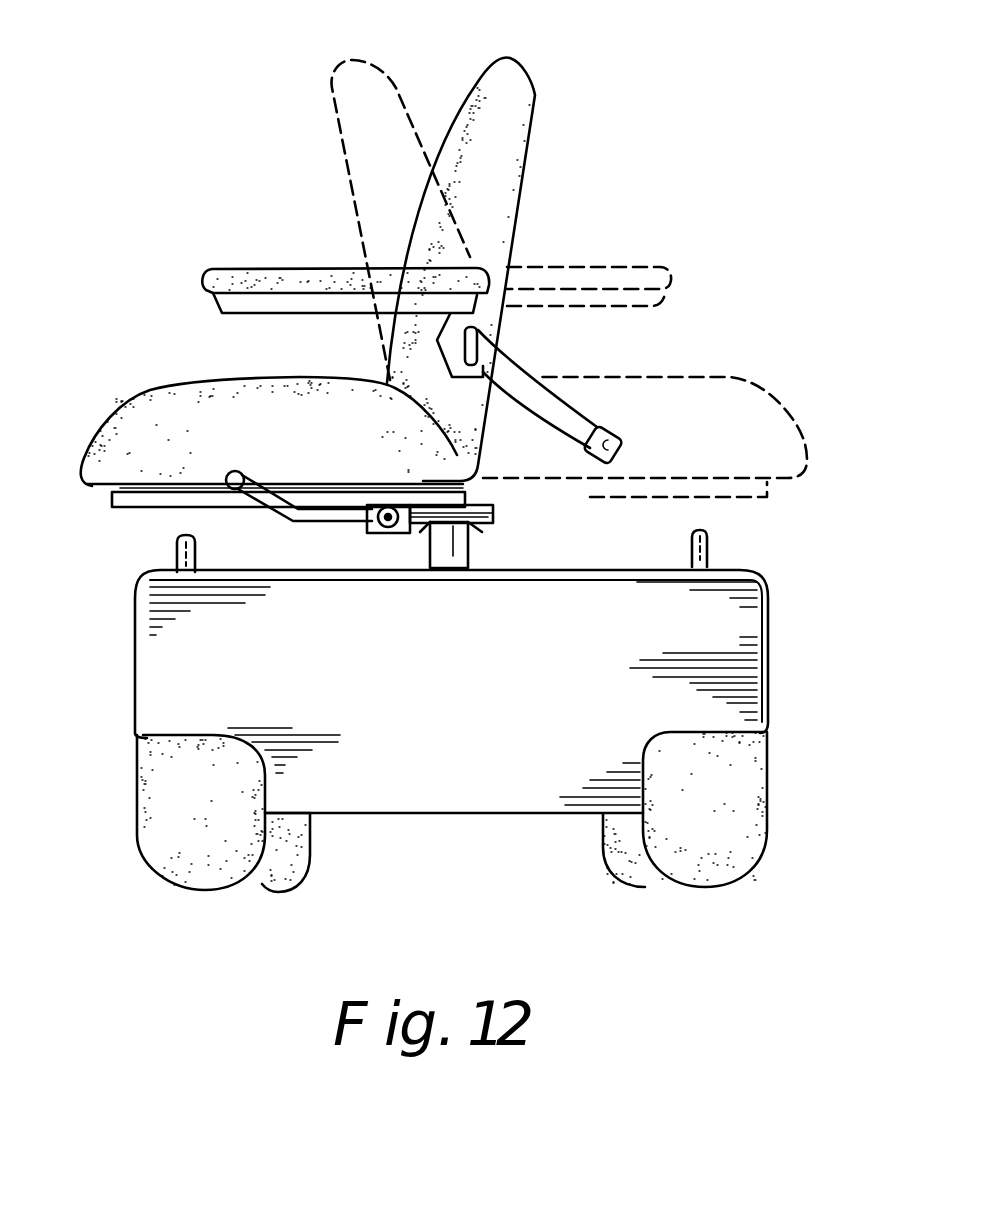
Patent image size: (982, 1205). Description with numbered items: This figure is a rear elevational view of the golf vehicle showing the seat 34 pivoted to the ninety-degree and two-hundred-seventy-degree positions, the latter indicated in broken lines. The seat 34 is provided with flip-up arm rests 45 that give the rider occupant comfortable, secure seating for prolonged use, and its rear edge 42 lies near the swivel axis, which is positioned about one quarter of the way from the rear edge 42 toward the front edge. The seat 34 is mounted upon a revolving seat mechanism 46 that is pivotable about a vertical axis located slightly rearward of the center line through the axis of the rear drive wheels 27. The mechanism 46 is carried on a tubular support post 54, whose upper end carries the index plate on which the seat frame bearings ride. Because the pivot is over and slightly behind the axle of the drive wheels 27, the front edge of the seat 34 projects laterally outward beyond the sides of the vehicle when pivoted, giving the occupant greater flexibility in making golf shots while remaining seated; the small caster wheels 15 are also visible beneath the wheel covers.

The seat 34 is at (398, 108).
The flip-up arm rests 45 is at (252, 268).
The rear edge of the seat 42 is at (476, 474).
The tubular support post 54 is at (480, 536).
The revolving seat mechanism 46 is at (128, 548).
The drive wheels 27 is at (160, 838).
The caster wheel 15 is at (297, 875).